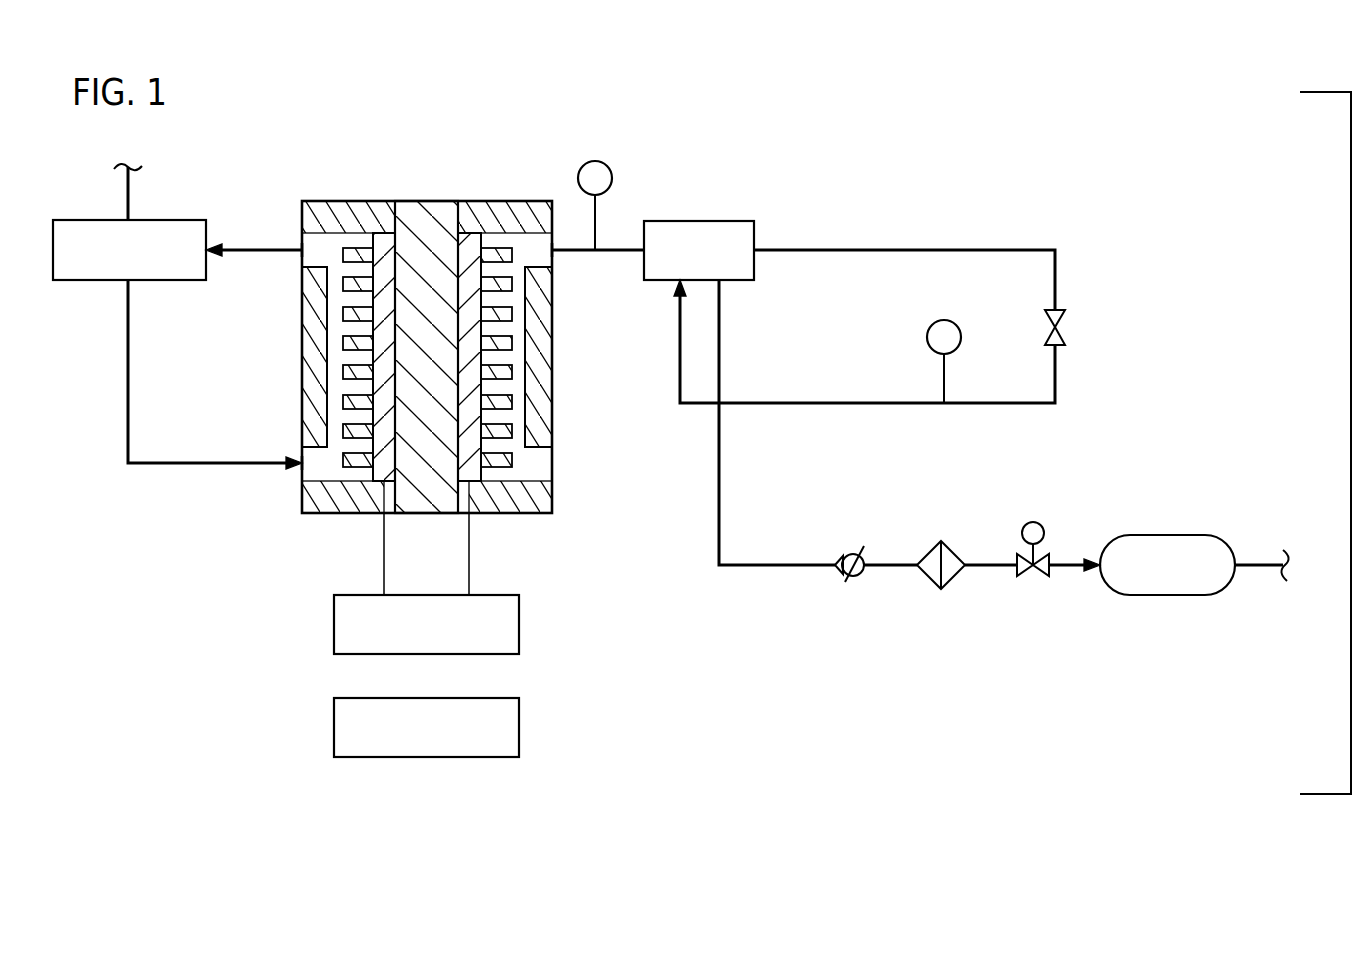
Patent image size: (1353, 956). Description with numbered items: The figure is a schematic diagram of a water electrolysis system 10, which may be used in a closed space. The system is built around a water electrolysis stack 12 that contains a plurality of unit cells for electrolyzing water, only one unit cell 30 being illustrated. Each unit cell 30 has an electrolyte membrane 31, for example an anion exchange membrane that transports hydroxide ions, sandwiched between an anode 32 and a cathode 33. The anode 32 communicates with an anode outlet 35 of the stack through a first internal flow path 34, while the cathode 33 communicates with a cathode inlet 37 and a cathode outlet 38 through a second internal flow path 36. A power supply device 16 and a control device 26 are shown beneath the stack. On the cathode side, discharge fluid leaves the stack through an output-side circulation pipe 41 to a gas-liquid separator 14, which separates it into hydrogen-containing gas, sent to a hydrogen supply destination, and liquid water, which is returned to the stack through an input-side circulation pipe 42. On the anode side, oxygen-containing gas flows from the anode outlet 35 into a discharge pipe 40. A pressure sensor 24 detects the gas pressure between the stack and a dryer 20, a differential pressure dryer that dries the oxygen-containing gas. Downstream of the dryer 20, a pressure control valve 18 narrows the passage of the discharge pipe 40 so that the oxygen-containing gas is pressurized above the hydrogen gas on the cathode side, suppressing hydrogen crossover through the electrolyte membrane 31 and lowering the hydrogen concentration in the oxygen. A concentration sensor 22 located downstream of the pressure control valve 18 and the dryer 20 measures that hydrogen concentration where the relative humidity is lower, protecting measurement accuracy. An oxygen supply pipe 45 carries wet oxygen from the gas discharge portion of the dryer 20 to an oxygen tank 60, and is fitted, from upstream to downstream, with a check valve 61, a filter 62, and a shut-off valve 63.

The water electrolysis system 10 is at (306, 139).
The water electrolysis stack 12 is at (516, 183).
The gas-liquid separator 14 is at (146, 219).
The power supply device 16 is at (519, 623).
The pressure control valve 18 is at (1066, 327).
The dryer 20 is at (683, 221).
The concentration sensor 22 is at (927, 336).
The pressure sensor 24 is at (598, 161).
The control device 26 is at (519, 726).
The unit cell 30 is at (497, 140).
The electrolyte membrane 31 is at (423, 226).
The anode 32 is at (472, 250).
The cathode 33 is at (380, 250).
The first internal flow path 34 is at (508, 412).
The anode outlet 35 is at (556, 259).
The second internal flow path 36 is at (337, 470).
The cathode inlet 37 is at (298, 478).
The cathode outlet 38 is at (300, 245).
The discharge pipe 40 is at (830, 250).
The output-side circulation pipe 41 is at (254, 253).
The input-side circulation pipe 42 is at (175, 463).
The oxygen supply pipe 45 is at (720, 470).
The oxygen tank 60 is at (1165, 535).
The check valve 61 is at (853, 578).
The filter 62 is at (950, 583).
The shut-off valve 63 is at (1033, 580).